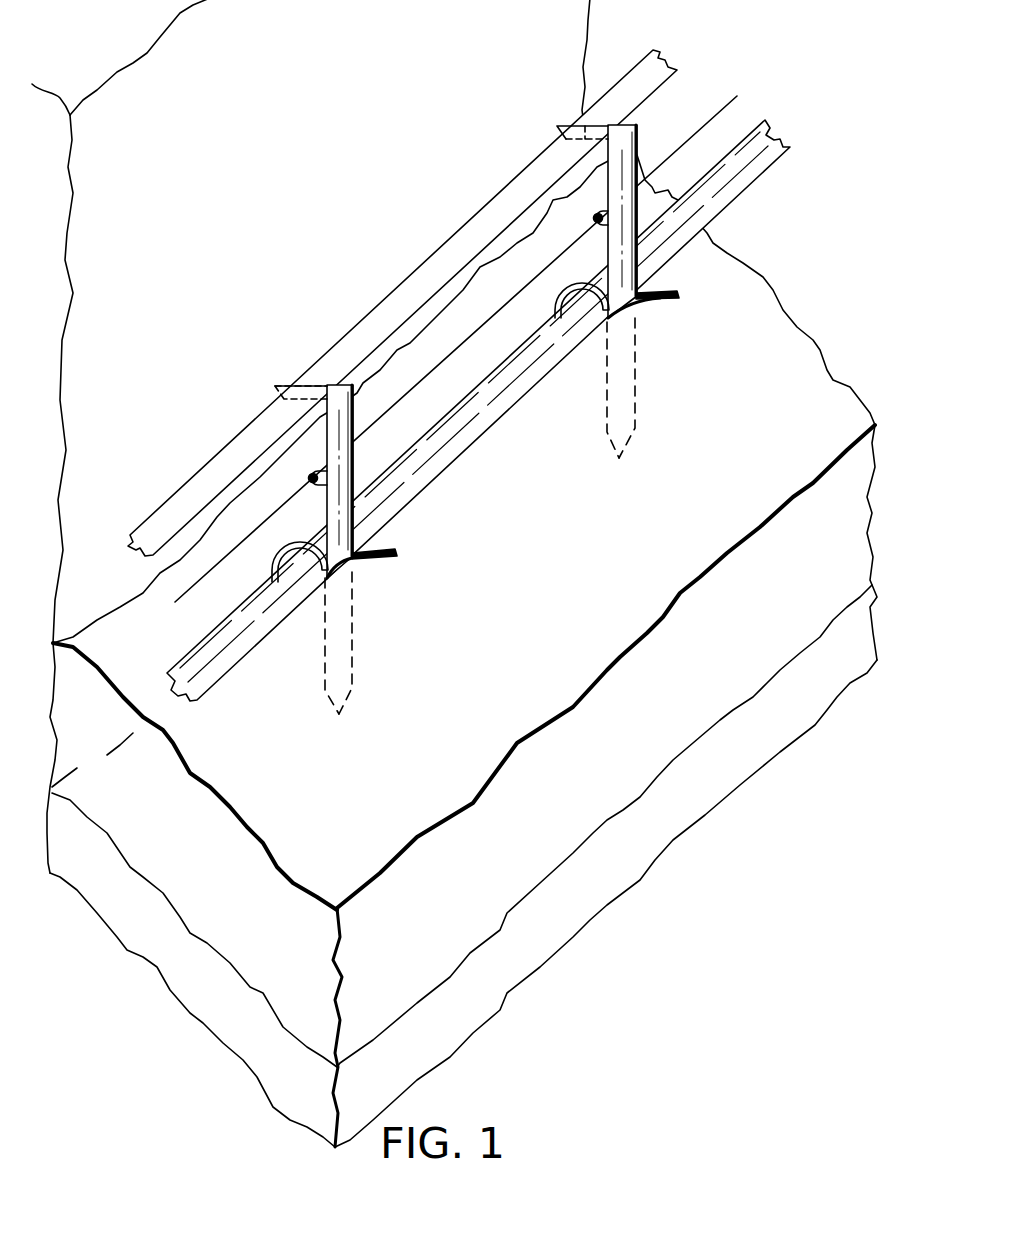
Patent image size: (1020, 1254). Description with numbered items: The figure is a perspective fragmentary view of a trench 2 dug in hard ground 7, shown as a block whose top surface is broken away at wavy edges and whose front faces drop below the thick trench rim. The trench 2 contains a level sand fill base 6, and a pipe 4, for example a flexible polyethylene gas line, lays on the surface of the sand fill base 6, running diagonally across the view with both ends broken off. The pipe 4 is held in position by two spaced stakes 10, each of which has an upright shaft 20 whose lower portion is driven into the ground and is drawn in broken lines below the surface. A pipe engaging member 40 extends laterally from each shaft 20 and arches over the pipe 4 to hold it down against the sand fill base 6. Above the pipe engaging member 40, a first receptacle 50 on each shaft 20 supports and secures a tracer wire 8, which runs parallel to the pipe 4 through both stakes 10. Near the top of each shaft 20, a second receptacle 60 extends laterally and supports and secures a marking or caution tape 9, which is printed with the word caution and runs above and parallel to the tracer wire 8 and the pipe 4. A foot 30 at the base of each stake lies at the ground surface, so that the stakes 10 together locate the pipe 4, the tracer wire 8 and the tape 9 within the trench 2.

The trench 2 is at (218, 184).
The pipe 4 is at (207, 675).
The sand fill base 6 is at (615, 745).
The hard ground 7 is at (190, 971).
The tracer wire 8 is at (178, 605).
The marking tape 9 is at (145, 530).
The stake 10 is at (501, 395).
The shaft 20 is at (652, 177).
The foot 30 is at (662, 294).
The pipe engaging member 40 is at (556, 297).
The first receptacle 50 is at (585, 221).
The second receptacle 60 is at (554, 127).